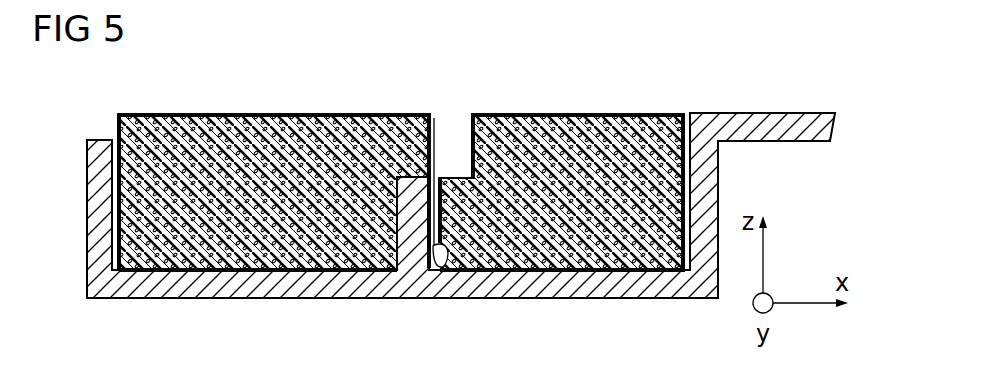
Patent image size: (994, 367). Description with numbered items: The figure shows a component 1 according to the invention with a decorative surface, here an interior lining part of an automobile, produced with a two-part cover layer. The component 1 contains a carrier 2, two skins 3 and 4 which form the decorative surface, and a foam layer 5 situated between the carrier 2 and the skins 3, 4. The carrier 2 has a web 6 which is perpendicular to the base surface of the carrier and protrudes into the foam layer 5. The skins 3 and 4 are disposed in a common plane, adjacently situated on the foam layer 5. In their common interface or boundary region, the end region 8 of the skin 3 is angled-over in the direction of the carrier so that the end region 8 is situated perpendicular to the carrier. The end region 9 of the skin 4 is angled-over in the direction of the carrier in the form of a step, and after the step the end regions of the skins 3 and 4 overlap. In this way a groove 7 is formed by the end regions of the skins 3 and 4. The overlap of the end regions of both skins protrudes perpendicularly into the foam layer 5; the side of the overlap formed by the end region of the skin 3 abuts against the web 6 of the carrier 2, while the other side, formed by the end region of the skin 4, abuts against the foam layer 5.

The component 1 is at (70, 148).
The carrier 2 is at (257, 287).
The skin 3 is at (295, 115).
The skin 4 is at (510, 113).
The foam layer 5 is at (230, 128).
The web 6 is at (402, 212).
The groove 7 is at (455, 138).
The end region of the skin 3 8 is at (437, 268).
The end region of the skin 4 9 is at (441, 212).